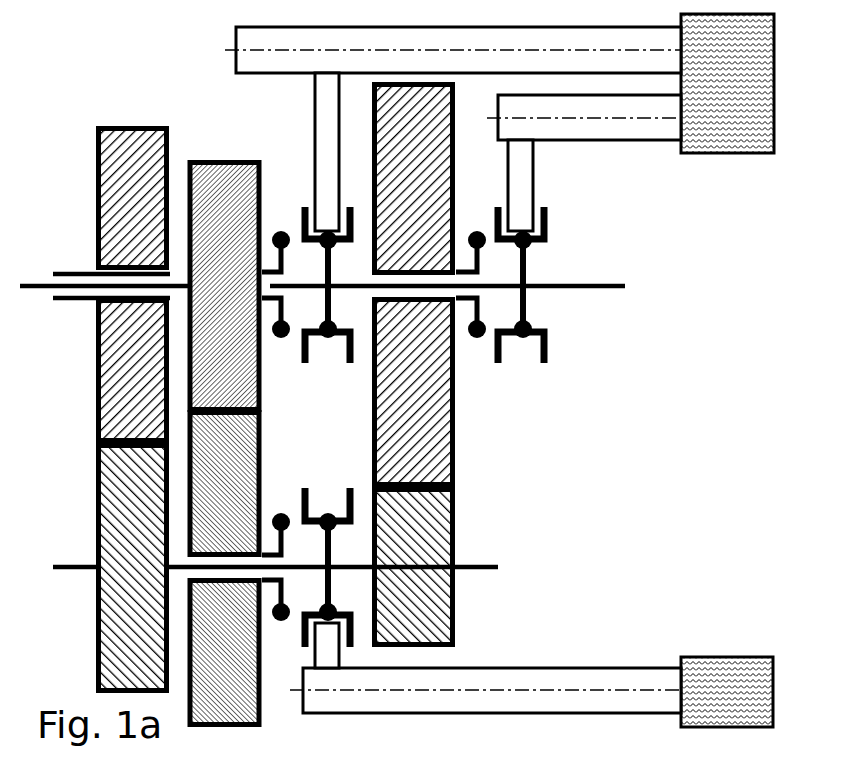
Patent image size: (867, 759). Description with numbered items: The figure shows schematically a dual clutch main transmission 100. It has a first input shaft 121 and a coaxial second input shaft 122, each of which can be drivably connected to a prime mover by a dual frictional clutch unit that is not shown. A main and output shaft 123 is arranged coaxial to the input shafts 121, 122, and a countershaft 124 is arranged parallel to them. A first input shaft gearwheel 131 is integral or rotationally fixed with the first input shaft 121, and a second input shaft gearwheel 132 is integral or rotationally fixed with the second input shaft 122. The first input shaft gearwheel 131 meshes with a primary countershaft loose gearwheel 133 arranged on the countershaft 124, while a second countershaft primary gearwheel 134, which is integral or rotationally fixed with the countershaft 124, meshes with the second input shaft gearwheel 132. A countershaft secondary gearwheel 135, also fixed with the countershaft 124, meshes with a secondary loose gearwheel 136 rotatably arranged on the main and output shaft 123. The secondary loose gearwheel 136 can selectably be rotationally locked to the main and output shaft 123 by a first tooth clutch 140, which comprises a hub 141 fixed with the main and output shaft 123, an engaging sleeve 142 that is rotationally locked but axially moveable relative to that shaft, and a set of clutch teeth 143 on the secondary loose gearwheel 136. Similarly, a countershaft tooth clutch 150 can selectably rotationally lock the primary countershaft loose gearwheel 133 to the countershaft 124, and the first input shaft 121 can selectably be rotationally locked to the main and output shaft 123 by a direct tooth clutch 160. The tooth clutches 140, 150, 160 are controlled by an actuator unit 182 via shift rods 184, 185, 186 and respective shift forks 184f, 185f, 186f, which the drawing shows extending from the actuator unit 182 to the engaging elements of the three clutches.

The dual clutch main transmission 100 is at (108, 83).
The first input shaft 121 is at (42, 284).
The second input shaft 122 is at (62, 301).
The main and output shaft 123 is at (628, 288).
The countershaft 124 is at (62, 564).
The first input shaft gearwheel 131 is at (224, 359).
The second input shaft gearwheel 132 is at (96, 140).
The primary countershaft loose gearwheel 133 is at (224, 653).
The second countershaft primary gearwheel 134 is at (96, 635).
The countershaft secondary gearwheel 135 is at (414, 567).
The secondary loose gearwheel 136 is at (414, 285).
The first tooth clutch 140 is at (620, 399).
The hub 141 is at (526, 309).
The engaging sleeve 142 is at (546, 355).
The set of clutch teeth 143 is at (477, 341).
The countershaft tooth clutch 150 is at (292, 492).
The direct tooth clutch 160 is at (292, 364).
The actuator unit 182 is at (763, 655).
The shift rod 184 is at (660, 142).
The shift fork 184f is at (536, 187).
The shift rod 185 is at (578, 667).
The shift fork 185f is at (340, 657).
The shift rod 186 is at (236, 63).
The shift fork 186f is at (315, 118).